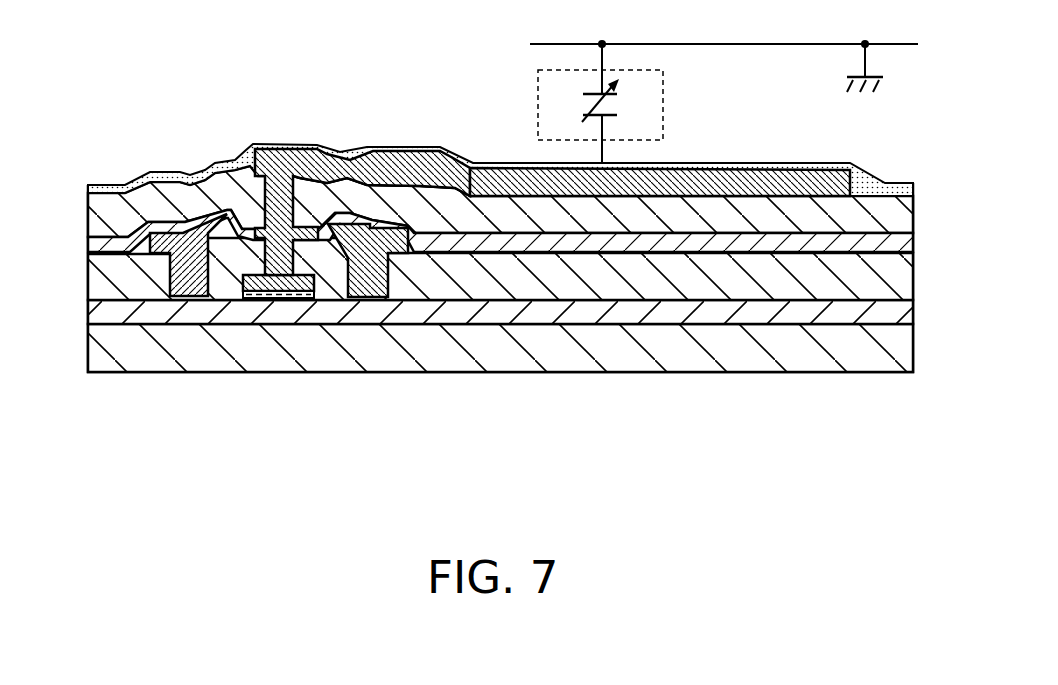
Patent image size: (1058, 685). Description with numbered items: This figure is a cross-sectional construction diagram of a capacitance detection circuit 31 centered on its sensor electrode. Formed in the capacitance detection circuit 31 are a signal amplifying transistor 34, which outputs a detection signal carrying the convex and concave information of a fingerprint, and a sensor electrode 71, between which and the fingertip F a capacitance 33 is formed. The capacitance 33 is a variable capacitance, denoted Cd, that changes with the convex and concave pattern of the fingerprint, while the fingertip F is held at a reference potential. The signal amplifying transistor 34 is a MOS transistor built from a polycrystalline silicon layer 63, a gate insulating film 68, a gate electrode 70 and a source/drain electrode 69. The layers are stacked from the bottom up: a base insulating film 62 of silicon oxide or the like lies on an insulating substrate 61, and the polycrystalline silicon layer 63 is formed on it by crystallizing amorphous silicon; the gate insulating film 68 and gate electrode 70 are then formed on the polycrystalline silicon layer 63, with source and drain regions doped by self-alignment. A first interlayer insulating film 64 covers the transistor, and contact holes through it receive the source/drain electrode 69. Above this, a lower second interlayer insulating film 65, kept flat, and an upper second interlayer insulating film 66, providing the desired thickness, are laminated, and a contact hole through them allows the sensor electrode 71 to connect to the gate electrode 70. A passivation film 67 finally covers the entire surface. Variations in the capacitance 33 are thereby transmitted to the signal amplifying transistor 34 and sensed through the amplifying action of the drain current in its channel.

The capacitance detection circuit 31 is at (176, 129).
The capacitance 33 is at (538, 88).
The signal amplifying transistor 34 is at (279, 337).
The insulating substrate 61 is at (88, 347).
The base insulating film 62 is at (88, 316).
The polycrystalline silicon layer 63 is at (355, 297).
The first interlayer insulating film 64 is at (88, 286).
The lower second interlayer insulating film 65 is at (88, 246).
The upper second interlayer insulating film 66 is at (88, 216).
The passivation film 67 is at (88, 191).
The gate insulating film 68 is at (268, 292).
The source/drain electrode 69 is at (199, 297).
The gate electrode 70 is at (308, 298).
The sensor electrode 71 is at (718, 172).